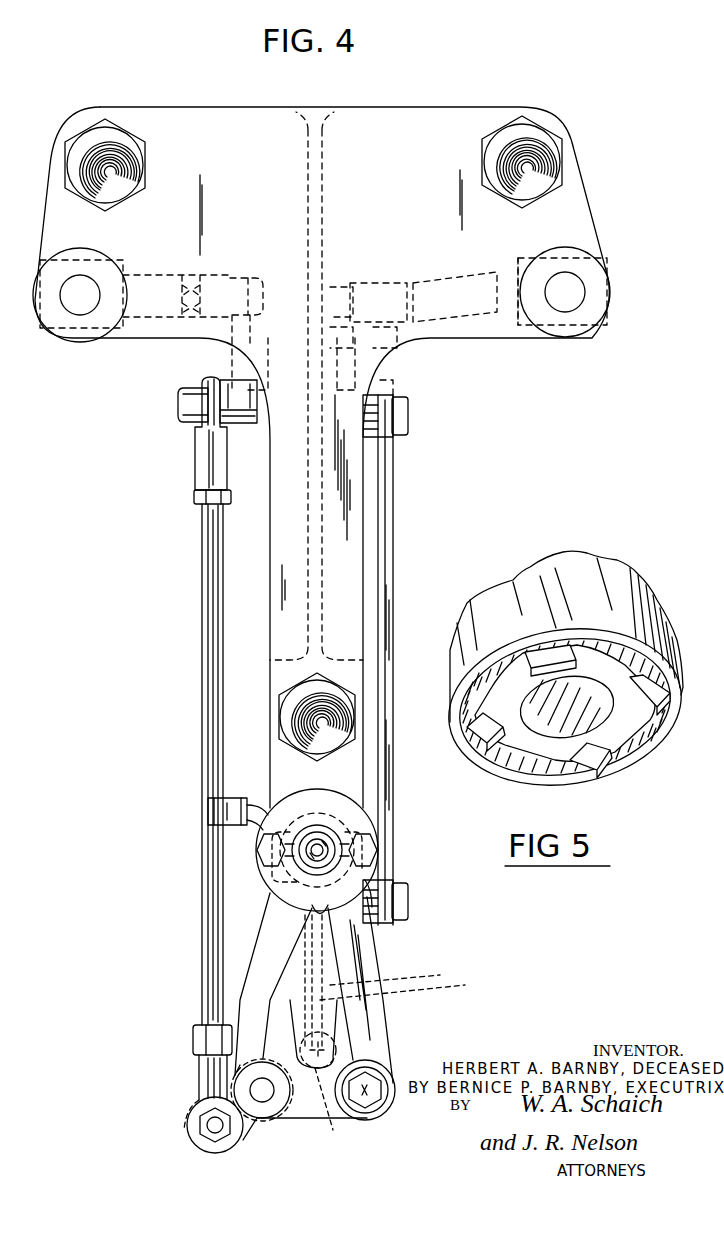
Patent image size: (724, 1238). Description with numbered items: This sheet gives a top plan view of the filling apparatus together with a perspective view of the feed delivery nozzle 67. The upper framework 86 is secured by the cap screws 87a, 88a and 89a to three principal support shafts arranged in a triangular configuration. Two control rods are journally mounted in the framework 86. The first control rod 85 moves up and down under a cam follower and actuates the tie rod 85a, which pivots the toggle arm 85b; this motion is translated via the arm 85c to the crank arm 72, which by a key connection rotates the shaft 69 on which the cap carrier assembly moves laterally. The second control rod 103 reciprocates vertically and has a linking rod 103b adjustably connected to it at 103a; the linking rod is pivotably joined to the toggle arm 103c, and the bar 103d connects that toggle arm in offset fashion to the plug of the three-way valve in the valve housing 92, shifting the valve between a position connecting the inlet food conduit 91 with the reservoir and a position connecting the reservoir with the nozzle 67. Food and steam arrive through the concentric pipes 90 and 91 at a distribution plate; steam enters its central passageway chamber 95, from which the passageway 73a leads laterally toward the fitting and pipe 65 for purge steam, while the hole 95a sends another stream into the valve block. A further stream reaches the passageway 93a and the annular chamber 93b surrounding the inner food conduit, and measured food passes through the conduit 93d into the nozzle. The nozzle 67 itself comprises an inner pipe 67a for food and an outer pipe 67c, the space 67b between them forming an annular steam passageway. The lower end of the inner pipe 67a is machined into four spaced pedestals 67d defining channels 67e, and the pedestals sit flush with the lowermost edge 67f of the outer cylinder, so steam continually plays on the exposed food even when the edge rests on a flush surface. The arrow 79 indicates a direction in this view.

In FIG. 4, the pipe 65 is at (383, 1085).
In FIG. 5, the feed delivery nozzle 67 is at (627, 560).
In FIG. 4, the inner pipe 67a is at (328, 1093).
In FIG. 5, the inner pipe 67a is at (578, 712).
In FIG. 5, the space 67b is at (510, 770).
In FIG. 5, the outer pipe 67c is at (556, 597).
In FIG. 5, the spaced pedestals 67d is at (480, 735).
In FIG. 5, the channels 67e is at (510, 690).
In FIG. 5, the lowermost edge 67f is at (610, 648).
In FIG. 4, the shaft 69 is at (263, 1095).
In FIG. 4, the crank arm 72 is at (250, 1130).
In FIG. 4, the passageway 73a is at (360, 958).
In FIG. 4, the arm 79 is at (412, 1004).
In FIG. 4, the control rod 85 is at (92, 306).
In FIG. 4, the tie rod 85a is at (167, 282).
In FIG. 4, the toggle arm 85b is at (230, 290).
In FIG. 4, the arm 85c is at (207, 585).
In FIG. 4, the framework 86 is at (375, 207).
In FIG. 4, the cap screw 87a is at (326, 716).
In FIG. 4, the cap screw 88a is at (110, 165).
In FIG. 4, the cap screw 89a is at (528, 161).
In FIG. 4, the pipe 90 is at (318, 840).
In FIG. 4, the inlet food conduit 91 is at (310, 852).
In FIG. 4, the valve housing 92 is at (375, 920).
In FIG. 4, the passageway 93a is at (389, 977).
In FIG. 4, the annular chamber 93b is at (262, 1010).
In FIG. 4, the conduit 93d is at (409, 987).
In FIG. 4, the central passageway chamber 95 is at (338, 805).
In FIG. 4, the hole 95a is at (355, 824).
In FIG. 4, the control rod 103 is at (582, 303).
In FIG. 4, the adjustable connection 103a is at (528, 257).
In FIG. 4, the linking rod 103b is at (458, 290).
In FIG. 4, the toggle arm 103c is at (365, 290).
In FIG. 4, the bar 103d is at (385, 498).